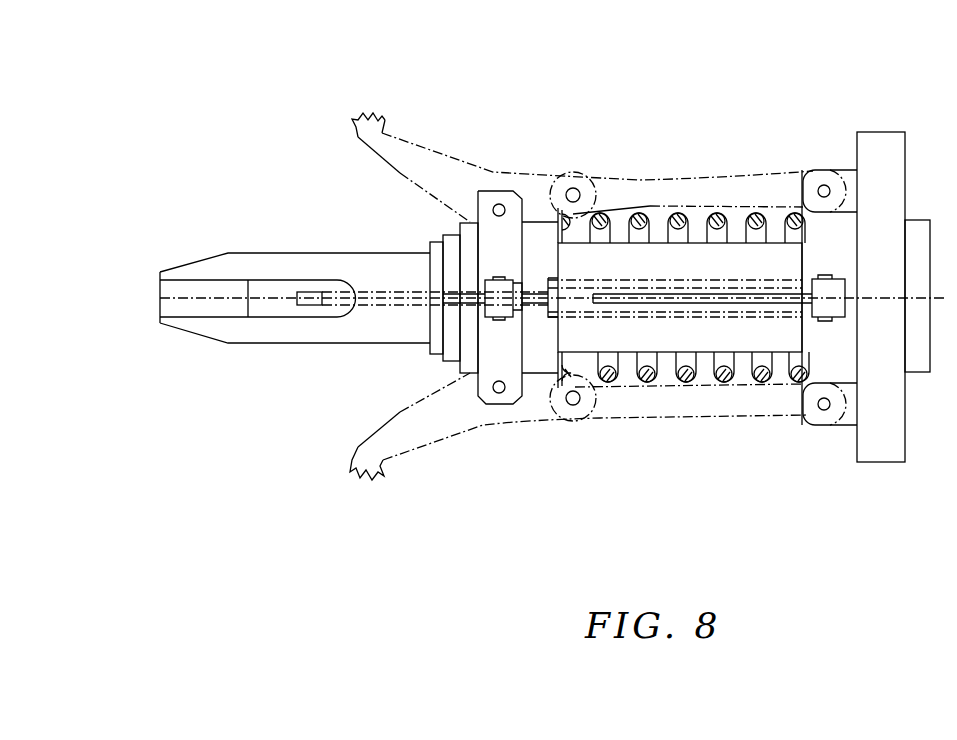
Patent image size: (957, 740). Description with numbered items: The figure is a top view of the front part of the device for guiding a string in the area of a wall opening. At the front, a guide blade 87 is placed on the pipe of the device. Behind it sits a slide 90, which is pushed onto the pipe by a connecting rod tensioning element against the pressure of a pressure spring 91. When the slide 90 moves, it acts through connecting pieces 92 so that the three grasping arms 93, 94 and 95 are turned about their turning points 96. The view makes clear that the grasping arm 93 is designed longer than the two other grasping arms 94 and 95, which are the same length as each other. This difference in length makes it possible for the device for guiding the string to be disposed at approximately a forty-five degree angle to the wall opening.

The guide blade 87 is at (234, 270).
The slide 90 is at (878, 147).
The pressure spring 91 is at (725, 379).
The connecting pieces 92 is at (670, 313).
The grasping arm 93 is at (322, 306).
The grasping arm 94 is at (405, 153).
The grasping arm 95 is at (415, 438).
The turning points 96 is at (500, 320).